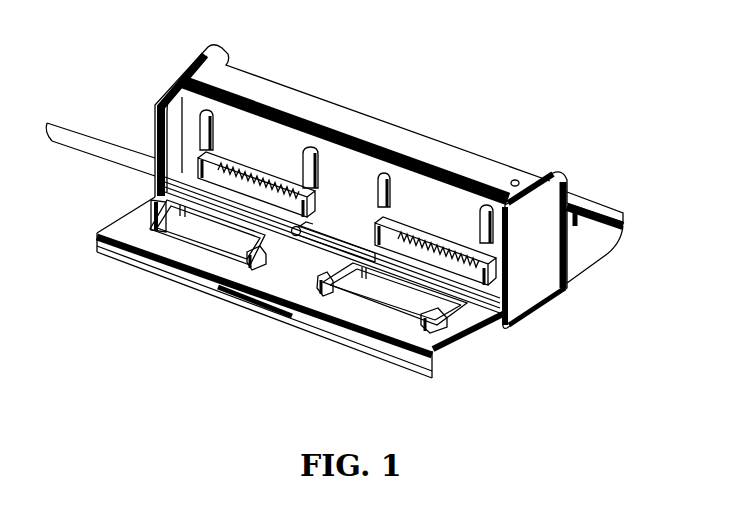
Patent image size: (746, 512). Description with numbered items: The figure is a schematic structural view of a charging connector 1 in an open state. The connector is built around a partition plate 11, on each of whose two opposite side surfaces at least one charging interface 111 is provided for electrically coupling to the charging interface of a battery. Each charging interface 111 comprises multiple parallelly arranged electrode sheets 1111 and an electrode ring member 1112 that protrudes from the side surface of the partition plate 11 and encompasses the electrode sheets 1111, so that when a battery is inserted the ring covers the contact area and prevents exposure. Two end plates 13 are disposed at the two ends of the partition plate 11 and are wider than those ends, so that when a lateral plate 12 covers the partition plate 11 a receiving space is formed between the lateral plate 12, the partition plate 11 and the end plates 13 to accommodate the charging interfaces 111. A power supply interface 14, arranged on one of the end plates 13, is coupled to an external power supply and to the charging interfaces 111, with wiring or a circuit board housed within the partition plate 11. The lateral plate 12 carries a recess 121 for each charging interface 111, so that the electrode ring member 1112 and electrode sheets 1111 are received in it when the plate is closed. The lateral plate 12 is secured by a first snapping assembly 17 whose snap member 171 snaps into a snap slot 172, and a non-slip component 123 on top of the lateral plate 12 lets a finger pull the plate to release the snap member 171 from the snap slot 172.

The charging connector 1 is at (488, 84).
The partition plate 11 is at (370, 133).
The charging interface 111 is at (364, 33).
The electrode sheets 1111 is at (229, 176).
The electrode ring member 1112 is at (262, 186).
The lateral plate 12 is at (470, 337).
The recess 121 is at (400, 290).
The non-slip component 123 is at (257, 308).
The end plate 13 is at (537, 213).
The power supply interface 14 is at (125, 125).
The first snapping assembly 17 is at (178, 320).
The snap member 171 is at (150, 230).
The snap slot 172 is at (259, 247).